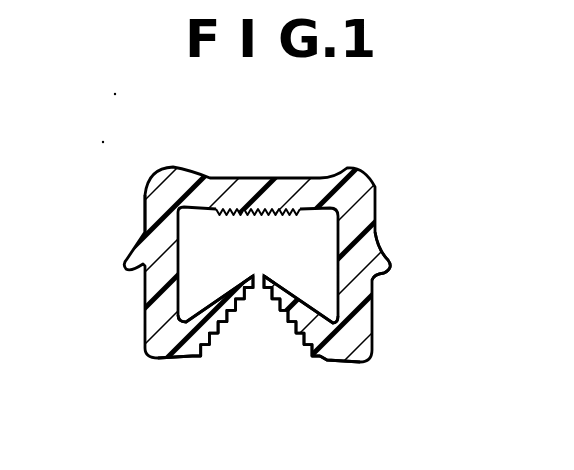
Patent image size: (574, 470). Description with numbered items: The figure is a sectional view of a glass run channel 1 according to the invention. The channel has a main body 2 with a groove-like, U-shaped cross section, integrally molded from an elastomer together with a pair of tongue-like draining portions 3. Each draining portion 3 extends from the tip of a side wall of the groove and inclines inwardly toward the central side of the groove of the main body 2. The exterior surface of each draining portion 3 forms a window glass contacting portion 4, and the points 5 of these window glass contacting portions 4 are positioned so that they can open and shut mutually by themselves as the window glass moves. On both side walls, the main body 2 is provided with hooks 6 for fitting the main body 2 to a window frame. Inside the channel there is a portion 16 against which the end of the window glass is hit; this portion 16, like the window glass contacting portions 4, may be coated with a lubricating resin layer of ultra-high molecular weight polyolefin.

The sealing strip body 1 is at (383, 183).
The main body 2 is at (148, 228).
The draining portion 3 is at (199, 318).
The window glass contacting portion 4 is at (214, 340).
The point 5 is at (252, 277).
The flange 6 is at (384, 257).
The portion against which the end of the window glass is hit 16 is at (251, 218).